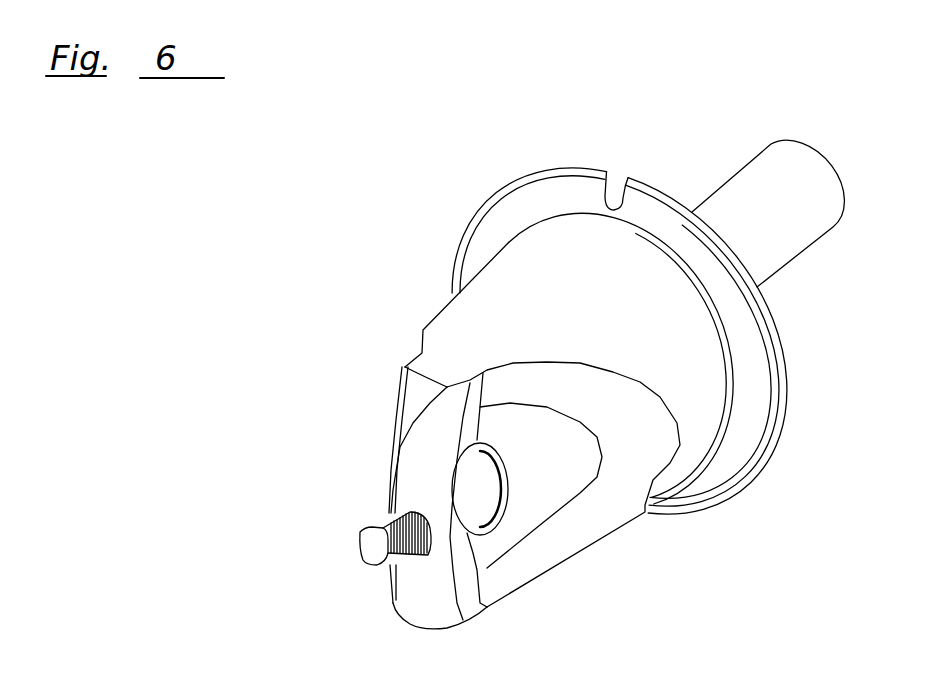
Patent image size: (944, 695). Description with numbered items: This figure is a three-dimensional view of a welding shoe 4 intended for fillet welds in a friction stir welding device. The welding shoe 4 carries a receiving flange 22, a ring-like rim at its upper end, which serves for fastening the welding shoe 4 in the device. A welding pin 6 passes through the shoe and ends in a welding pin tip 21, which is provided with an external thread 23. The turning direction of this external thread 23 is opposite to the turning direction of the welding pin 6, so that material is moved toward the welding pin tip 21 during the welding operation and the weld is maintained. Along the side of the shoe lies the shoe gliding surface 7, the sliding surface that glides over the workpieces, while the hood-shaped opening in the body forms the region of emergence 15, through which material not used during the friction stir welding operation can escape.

The welding shoe 4 is at (688, 373).
The welding pin 6 is at (528, 478).
The shoe gliding surface 7 is at (395, 438).
The region of emergence 15 is at (600, 450).
The welding pin tip 21 is at (367, 542).
The receiving flange 22 is at (778, 340).
The external thread 23 is at (377, 512).